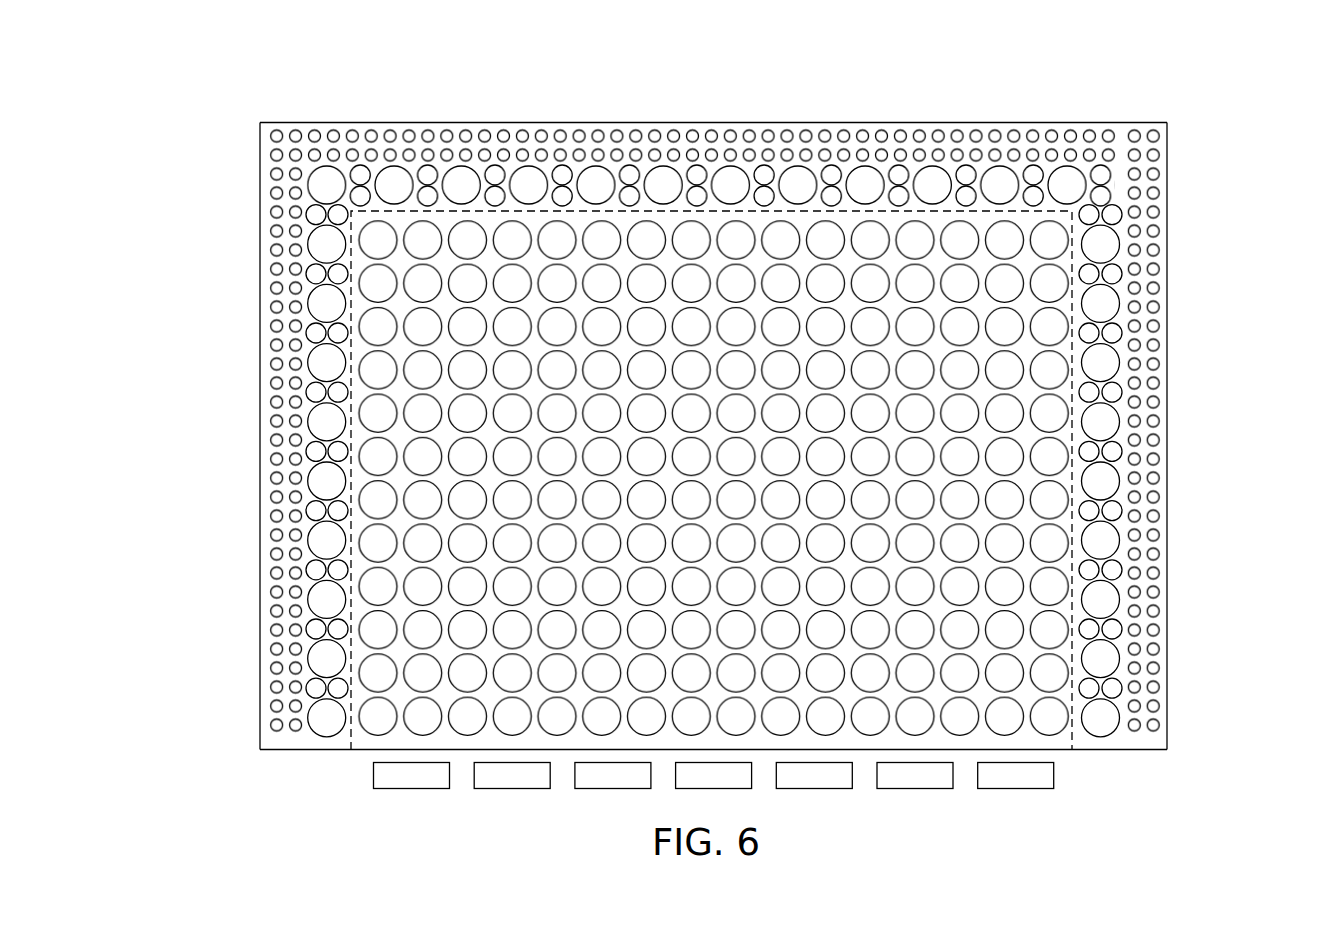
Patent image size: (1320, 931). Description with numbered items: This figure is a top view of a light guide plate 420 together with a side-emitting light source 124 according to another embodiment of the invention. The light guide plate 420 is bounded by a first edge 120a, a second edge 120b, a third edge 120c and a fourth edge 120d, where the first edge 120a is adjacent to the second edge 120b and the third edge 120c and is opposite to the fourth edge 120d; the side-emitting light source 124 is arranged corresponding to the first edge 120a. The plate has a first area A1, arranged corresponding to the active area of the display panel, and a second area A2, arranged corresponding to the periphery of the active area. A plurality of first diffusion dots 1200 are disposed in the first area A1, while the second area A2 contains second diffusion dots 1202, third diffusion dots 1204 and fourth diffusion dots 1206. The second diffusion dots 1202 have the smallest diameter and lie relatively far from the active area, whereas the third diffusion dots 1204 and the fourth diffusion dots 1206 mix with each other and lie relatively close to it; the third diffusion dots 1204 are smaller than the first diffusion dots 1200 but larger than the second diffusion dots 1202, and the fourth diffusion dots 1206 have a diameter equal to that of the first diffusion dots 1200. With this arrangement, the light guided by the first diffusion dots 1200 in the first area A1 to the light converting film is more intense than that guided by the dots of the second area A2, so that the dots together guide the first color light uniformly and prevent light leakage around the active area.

The light guide plate 420 is at (1198, 120).
The first edge 120a is at (859, 750).
The second edge 120b is at (259, 436).
The third edge 120c is at (1167, 437).
The fourth edge 120d is at (713, 122).
The first area A1 is at (598, 218).
The second area A2 is at (658, 130).
The first diffusion dots 1200 is at (466, 232).
The second diffusion dots 1202 is at (293, 130).
The third diffusion dots 1204 is at (366, 170).
The fourth diffusion dots 1206 is at (540, 172).
The side-emitting light source 124 is at (373, 773).